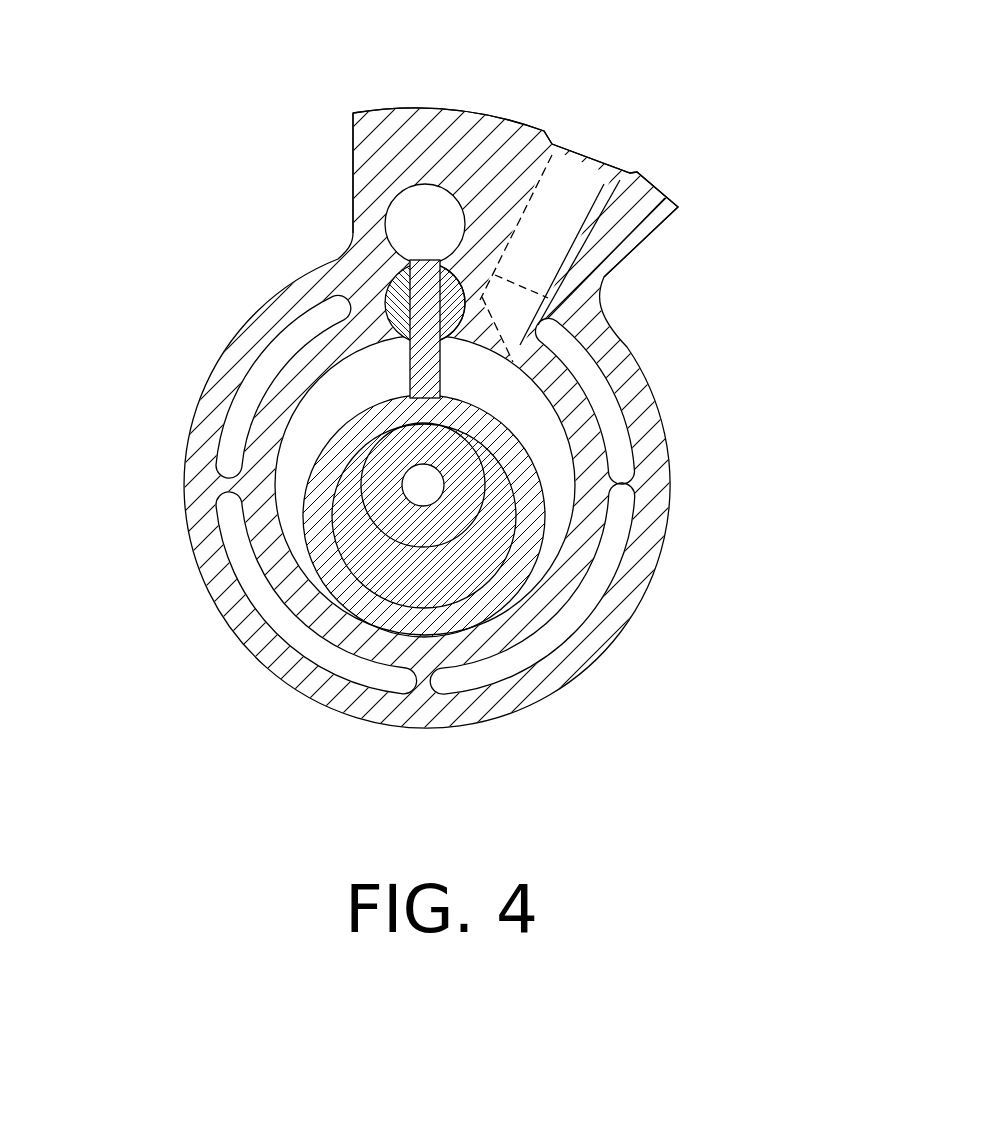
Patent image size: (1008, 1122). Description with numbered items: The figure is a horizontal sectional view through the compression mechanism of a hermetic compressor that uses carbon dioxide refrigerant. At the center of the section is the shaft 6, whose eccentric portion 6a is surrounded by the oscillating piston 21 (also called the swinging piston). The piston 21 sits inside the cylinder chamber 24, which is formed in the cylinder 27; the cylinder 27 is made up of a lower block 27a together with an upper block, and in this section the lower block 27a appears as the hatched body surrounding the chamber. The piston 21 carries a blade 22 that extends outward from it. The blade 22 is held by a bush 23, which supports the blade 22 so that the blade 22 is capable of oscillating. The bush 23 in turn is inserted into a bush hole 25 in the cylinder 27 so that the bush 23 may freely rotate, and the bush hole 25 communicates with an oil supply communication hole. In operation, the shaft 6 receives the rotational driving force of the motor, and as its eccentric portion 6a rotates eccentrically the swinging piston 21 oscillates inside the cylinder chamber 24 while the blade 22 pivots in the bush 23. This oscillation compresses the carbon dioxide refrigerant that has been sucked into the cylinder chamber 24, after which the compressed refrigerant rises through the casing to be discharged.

The oscillating piston 21 is at (325, 465).
The blade 22 is at (410, 334).
The bush 23 is at (397, 303).
The cylinder chamber 24 is at (520, 418).
The bush hole 25 is at (466, 280).
The cylinder 27 is at (698, 129).
The lower block 27a is at (422, 127).
The shaft 6 is at (440, 495).
The eccentric portion 6a is at (430, 580).